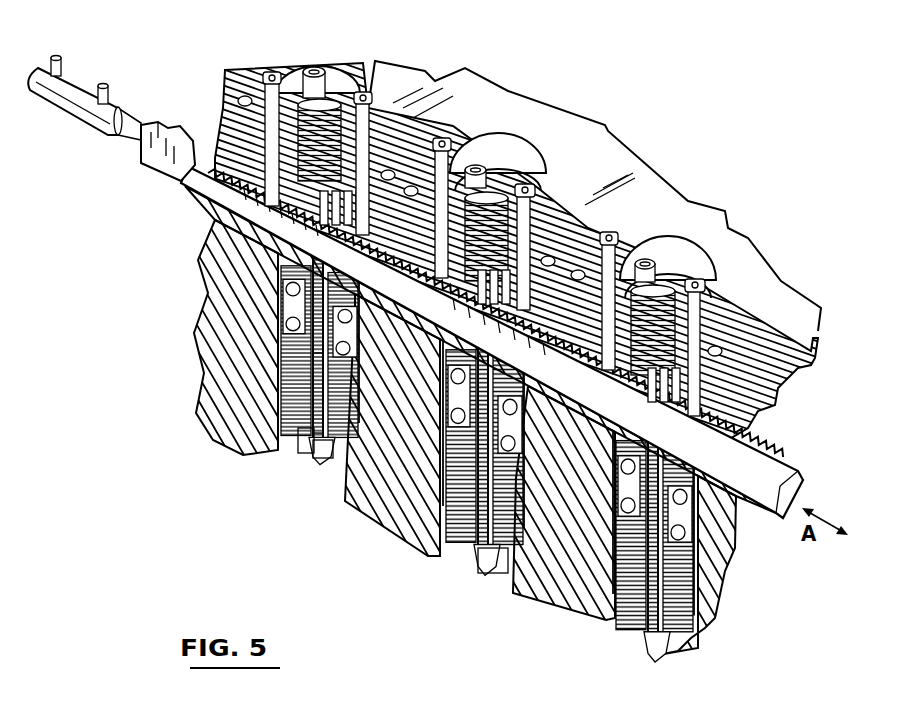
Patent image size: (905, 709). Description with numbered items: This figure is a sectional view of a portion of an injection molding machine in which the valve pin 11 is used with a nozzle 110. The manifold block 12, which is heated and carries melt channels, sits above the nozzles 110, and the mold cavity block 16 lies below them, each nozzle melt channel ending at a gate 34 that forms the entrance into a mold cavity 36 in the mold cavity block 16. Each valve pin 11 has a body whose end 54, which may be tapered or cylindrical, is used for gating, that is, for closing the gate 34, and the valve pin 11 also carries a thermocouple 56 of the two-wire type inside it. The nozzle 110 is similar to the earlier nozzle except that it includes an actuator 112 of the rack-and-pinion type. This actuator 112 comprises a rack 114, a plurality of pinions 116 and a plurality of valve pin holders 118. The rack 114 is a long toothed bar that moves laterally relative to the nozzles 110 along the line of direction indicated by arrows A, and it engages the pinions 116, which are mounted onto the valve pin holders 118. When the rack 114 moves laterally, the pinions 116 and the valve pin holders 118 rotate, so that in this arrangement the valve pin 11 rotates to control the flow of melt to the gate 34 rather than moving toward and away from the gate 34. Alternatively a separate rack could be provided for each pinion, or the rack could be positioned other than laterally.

The manifold block 12 is at (733, 262).
The mold cavity block 16 is at (218, 330).
The actuator 112 is at (189, 110).
The rack 114 is at (235, 70).
The pinions 116 is at (290, 97).
The valve pin holders 118 is at (357, 97).
The thermocouple 56 is at (293, 360).
The valve pin 11 is at (285, 345).
The end 54 is at (300, 443).
The mold cavity 36 is at (312, 447).
The nozzle 110 is at (323, 453).
The gate 34 is at (468, 548).